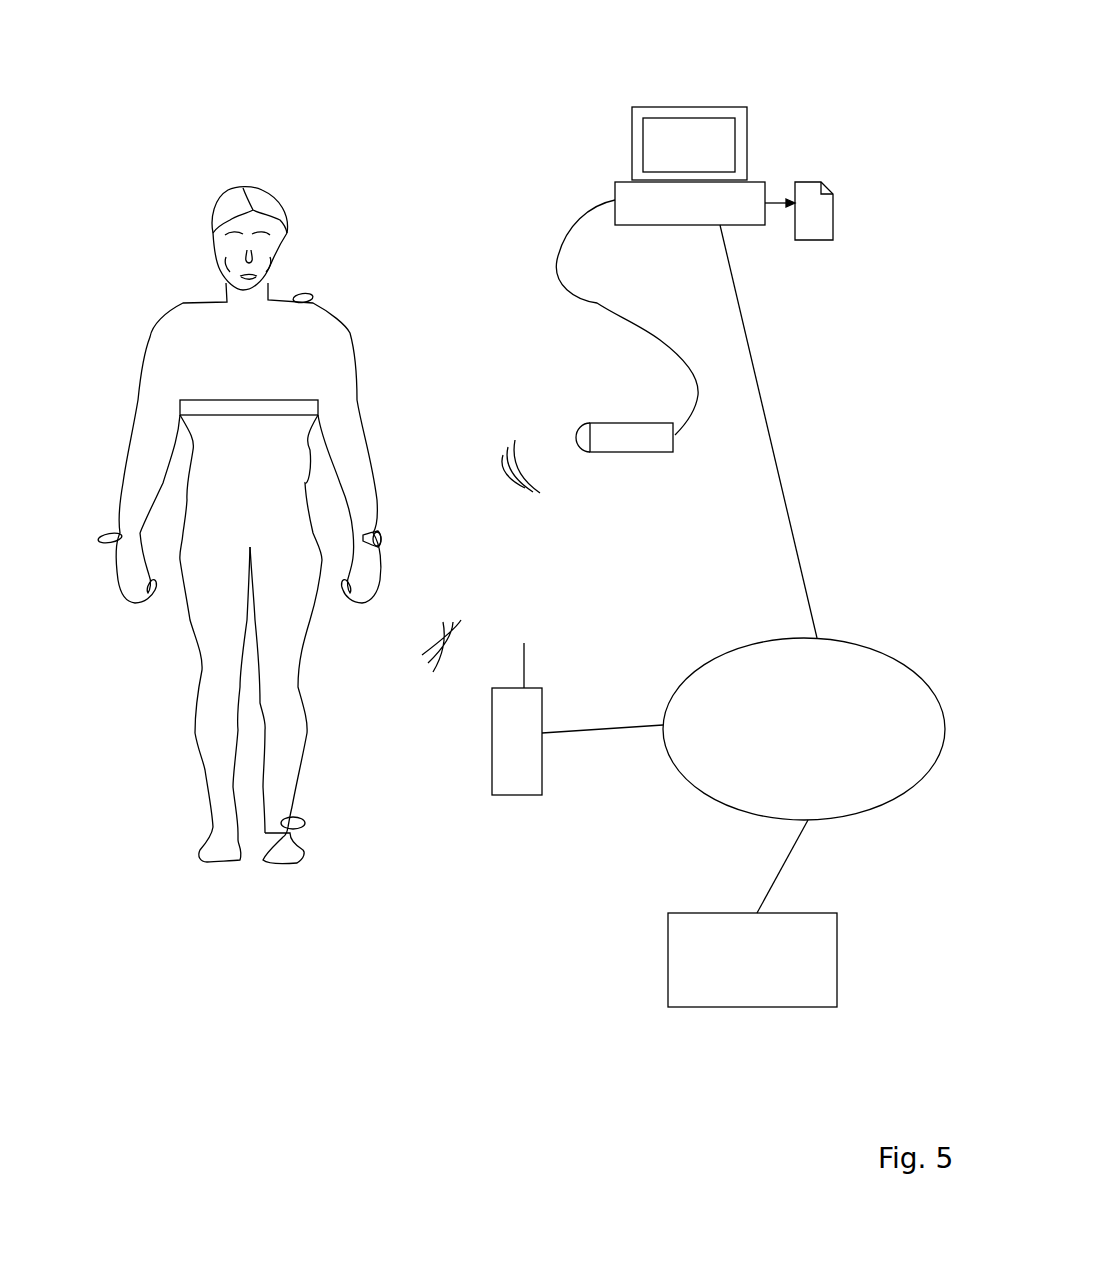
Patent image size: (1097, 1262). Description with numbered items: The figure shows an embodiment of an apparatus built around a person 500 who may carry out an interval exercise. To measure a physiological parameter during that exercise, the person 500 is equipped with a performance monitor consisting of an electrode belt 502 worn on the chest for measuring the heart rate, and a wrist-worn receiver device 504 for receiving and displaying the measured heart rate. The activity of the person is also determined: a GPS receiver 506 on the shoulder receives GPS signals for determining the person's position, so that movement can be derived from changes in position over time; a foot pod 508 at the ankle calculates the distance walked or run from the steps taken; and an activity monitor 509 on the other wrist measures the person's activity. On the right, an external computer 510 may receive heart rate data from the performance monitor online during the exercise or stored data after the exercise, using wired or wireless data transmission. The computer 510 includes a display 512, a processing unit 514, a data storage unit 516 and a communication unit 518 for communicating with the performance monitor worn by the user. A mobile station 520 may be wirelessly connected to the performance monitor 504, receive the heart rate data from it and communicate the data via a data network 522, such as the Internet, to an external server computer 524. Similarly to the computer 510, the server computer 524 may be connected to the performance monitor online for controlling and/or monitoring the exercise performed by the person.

The person 500 is at (183, 306).
The electrode belt 502 is at (245, 400).
The wrist-worn receiver device 504 is at (380, 537).
The GPS receiver 506 is at (313, 298).
The foot pod 508 is at (303, 818).
The activity monitor 509 is at (107, 547).
The external computer 510 is at (679, 149).
The display 512 is at (633, 107).
The processing unit 514 is at (667, 227).
The data storage unit 516 is at (812, 240).
The communication unit 518 is at (647, 453).
The mobile station 520 is at (508, 797).
The data network 522 is at (867, 812).
The external server computer 524 is at (722, 1007).